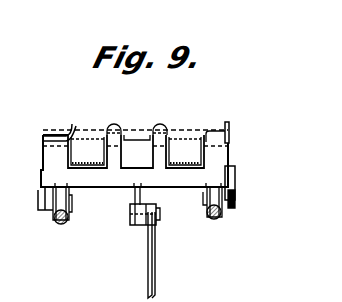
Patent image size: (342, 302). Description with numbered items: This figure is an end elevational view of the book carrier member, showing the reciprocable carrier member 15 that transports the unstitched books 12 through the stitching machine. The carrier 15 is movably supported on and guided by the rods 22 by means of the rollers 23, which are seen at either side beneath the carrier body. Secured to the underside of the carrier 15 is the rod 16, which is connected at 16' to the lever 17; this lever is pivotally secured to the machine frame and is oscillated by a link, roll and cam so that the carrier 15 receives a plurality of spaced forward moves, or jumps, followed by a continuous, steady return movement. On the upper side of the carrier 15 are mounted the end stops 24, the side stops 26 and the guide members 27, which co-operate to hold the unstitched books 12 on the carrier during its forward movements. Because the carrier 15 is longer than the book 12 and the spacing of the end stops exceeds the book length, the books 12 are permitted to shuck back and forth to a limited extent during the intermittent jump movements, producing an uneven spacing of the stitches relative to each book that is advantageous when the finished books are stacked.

The unstitched book 12 is at (187, 131).
The reciprocable carrier member 15 is at (55, 157).
The rod 16 is at (116, 199).
The connection 16' is at (123, 223).
The lever 17 is at (151, 265).
The rod 22 is at (60, 224).
The roller 23 is at (50, 210).
The end stop 24 is at (160, 127).
The side stop 26 is at (230, 128).
The guide member 27 is at (50, 134).